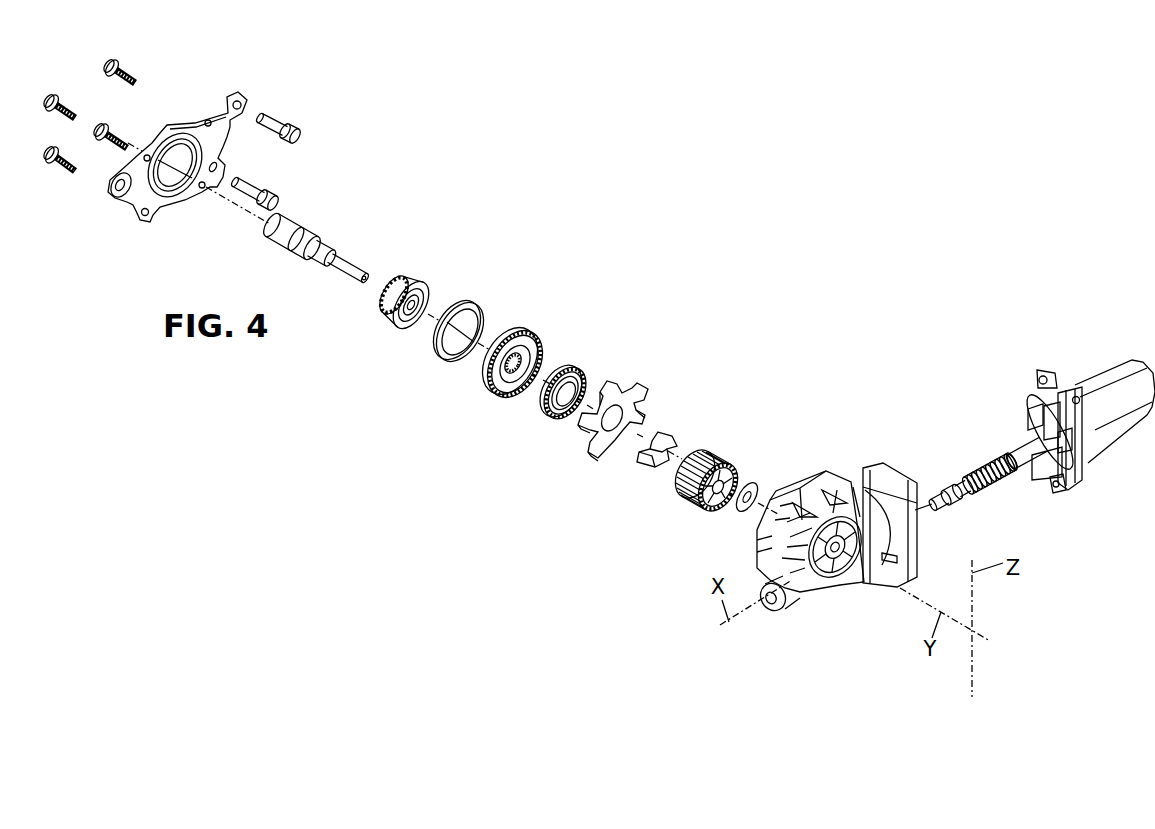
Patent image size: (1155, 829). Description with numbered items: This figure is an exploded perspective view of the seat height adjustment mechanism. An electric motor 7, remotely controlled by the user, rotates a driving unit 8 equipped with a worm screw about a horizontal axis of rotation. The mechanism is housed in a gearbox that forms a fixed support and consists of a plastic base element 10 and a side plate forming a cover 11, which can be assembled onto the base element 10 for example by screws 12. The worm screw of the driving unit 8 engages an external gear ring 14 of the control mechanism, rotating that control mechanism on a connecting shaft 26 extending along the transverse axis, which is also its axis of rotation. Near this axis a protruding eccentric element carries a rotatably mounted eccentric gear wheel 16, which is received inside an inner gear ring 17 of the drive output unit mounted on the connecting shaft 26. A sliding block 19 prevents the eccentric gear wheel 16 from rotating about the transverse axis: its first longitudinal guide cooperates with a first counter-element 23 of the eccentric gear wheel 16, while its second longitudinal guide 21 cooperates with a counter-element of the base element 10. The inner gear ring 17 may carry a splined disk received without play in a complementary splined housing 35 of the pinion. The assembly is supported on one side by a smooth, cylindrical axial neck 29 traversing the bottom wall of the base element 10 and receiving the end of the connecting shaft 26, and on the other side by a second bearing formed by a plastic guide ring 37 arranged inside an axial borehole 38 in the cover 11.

The electric motor 7 is at (1102, 383).
The driving unit 8 is at (982, 467).
The base element 10 is at (140, 195).
The cover 11 is at (836, 559).
The screws 12 is at (65, 188).
The external gear ring 14 is at (725, 447).
The eccentric gear wheel 16 is at (567, 401).
The inner gear ring 17 is at (530, 330).
The sliding block 19 is at (627, 423).
The second longitudinal guide 21 is at (620, 427).
The first counter-element 23 is at (556, 424).
The connecting shaft 26 is at (310, 230).
The smooth axial neck 29 is at (838, 552).
The splined housing 35 is at (410, 327).
The guide ring 37 is at (460, 305).
The axial borehole 38 is at (405, 308).